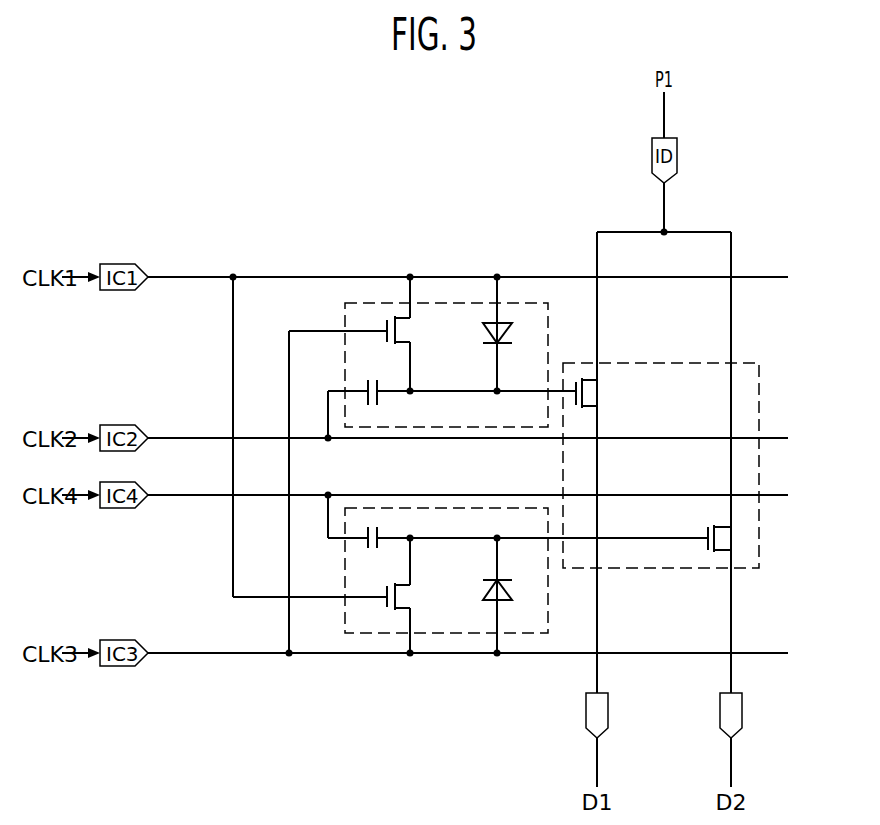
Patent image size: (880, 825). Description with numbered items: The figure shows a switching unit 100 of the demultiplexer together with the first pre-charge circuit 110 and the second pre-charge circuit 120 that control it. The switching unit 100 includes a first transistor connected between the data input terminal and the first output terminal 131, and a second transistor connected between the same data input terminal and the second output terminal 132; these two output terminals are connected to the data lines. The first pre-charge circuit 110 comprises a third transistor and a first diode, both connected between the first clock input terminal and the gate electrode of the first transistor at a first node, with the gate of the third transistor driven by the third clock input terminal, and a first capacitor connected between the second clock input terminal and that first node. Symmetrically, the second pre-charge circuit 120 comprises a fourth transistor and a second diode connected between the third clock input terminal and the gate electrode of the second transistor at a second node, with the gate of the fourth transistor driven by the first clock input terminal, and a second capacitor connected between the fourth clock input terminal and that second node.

The switching unit 100 is at (760, 406).
The first pre-charge circuit 110 is at (375, 303).
The second pre-charge circuit 120 is at (375, 633).
The first output terminal 131 is at (592, 736).
The second output terminal 132 is at (724, 736).